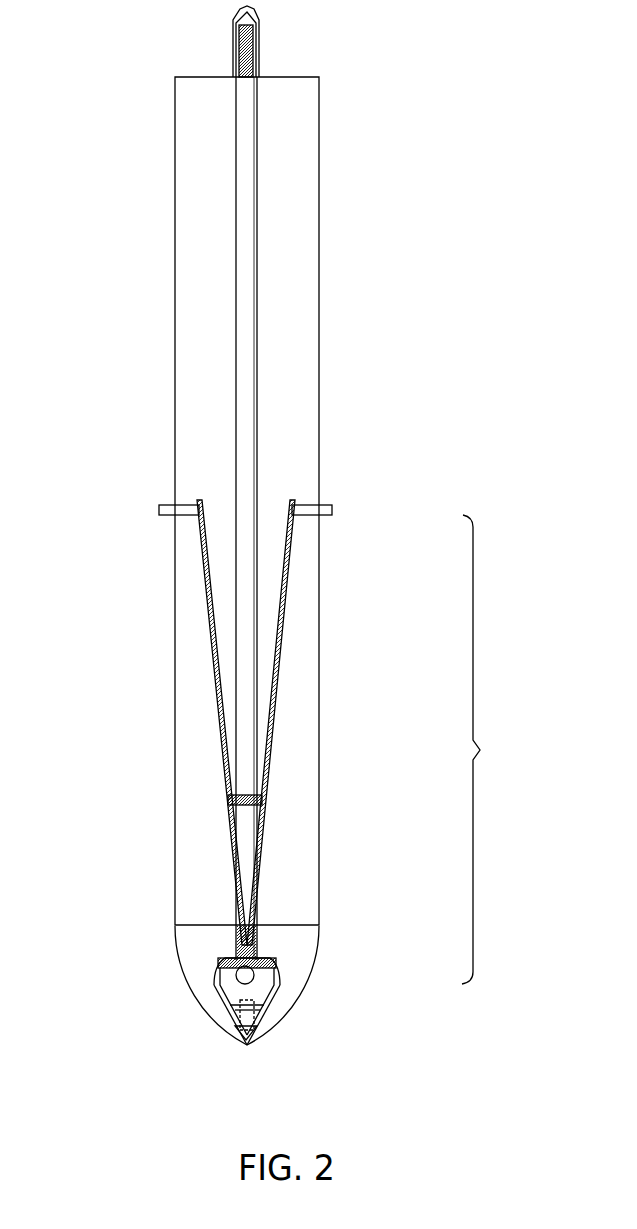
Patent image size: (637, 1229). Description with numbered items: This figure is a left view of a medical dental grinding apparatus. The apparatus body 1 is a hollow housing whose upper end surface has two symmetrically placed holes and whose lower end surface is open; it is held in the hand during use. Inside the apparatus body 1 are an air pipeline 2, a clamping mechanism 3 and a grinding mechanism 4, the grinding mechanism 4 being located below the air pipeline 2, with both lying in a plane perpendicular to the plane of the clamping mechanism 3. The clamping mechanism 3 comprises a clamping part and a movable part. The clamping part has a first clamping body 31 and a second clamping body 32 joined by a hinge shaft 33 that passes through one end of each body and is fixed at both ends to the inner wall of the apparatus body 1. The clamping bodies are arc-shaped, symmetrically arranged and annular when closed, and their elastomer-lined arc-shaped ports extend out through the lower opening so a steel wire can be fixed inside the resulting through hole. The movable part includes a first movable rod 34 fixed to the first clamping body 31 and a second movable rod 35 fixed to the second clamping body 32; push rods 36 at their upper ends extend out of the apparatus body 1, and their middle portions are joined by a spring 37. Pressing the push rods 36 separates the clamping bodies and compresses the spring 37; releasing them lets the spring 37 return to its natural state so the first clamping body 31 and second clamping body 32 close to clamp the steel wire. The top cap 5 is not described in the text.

The apparatus body 1 is at (319, 294).
The air pipeline 2 is at (247, 294).
The clamping mechanism 3 is at (492, 749).
The grinding mechanism 4 is at (245, 995).
The top cap 5 is at (245, 40).
The first clamping body 31 is at (216, 995).
The second clamping body 32 is at (216, 995).
The hinge shaft 33 is at (247, 946).
The first movable rod 34 is at (206, 591).
The second movable rod 35 is at (288, 591).
The push rods 36 is at (326, 510).
The spring 37 is at (244, 800).